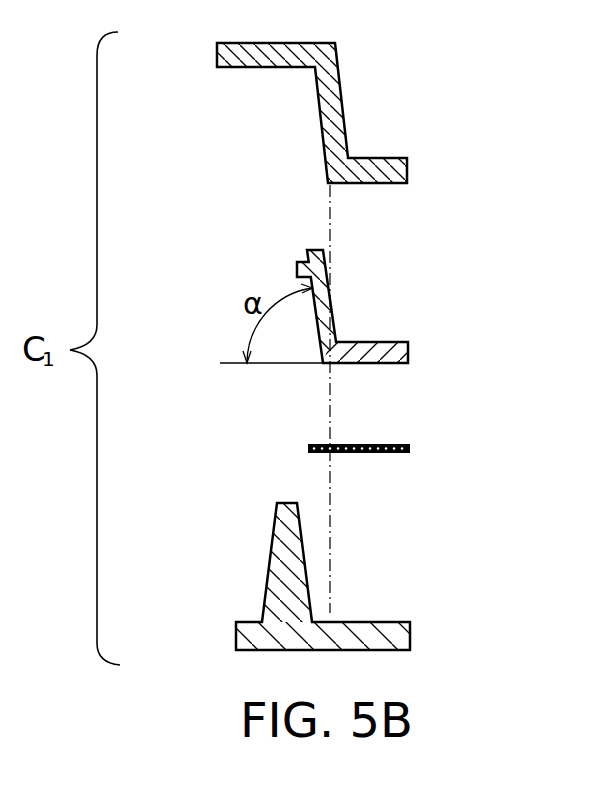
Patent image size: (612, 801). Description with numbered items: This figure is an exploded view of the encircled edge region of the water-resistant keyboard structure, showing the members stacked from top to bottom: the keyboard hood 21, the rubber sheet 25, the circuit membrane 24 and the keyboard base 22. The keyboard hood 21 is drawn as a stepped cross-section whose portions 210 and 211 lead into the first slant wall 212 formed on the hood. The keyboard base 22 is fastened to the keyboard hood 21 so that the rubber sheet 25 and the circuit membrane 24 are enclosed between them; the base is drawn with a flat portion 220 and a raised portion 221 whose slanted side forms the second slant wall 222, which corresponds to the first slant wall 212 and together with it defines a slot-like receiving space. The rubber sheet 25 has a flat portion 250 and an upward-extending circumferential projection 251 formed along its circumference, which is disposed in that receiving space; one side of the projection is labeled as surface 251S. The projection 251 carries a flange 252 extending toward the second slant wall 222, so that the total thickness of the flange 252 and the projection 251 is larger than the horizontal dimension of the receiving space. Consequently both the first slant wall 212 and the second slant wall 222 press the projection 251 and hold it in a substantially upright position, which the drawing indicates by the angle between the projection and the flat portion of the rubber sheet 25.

The keyboard hood 21 is at (407, 165).
The top flat portion of first electrode 210 is at (247, 68).
The inclined portion of first electrode 211 is at (328, 107).
The first slant wall 212 is at (323, 148).
The rubber sheet 25 is at (408, 348).
The flat portion of second electrode 250 is at (387, 342).
The upward-extending circumferential projection 251 is at (320, 250).
The surface of inclined portion 251S is at (320, 262).
The flange 252 is at (297, 268).
The circuit membrane 24 is at (410, 443).
The keyboard base 22 is at (410, 633).
The flat portion of third electrode 220 is at (365, 622).
The protruding portion of third electrode 221 is at (280, 565).
The second slant wall 222 is at (268, 603).